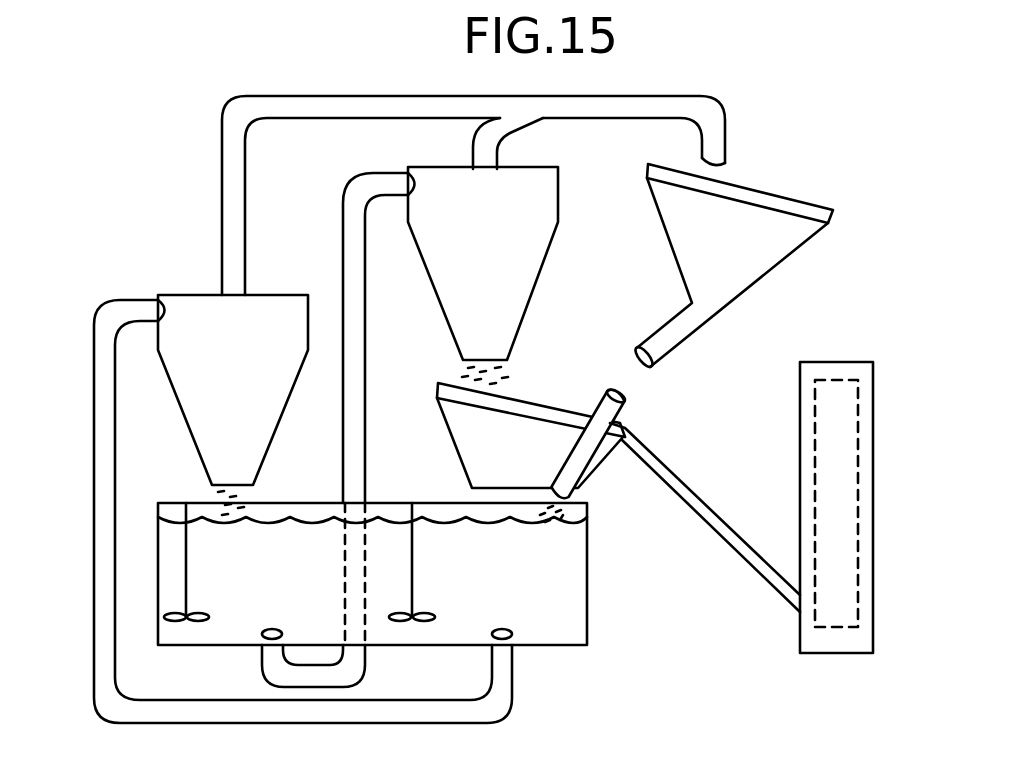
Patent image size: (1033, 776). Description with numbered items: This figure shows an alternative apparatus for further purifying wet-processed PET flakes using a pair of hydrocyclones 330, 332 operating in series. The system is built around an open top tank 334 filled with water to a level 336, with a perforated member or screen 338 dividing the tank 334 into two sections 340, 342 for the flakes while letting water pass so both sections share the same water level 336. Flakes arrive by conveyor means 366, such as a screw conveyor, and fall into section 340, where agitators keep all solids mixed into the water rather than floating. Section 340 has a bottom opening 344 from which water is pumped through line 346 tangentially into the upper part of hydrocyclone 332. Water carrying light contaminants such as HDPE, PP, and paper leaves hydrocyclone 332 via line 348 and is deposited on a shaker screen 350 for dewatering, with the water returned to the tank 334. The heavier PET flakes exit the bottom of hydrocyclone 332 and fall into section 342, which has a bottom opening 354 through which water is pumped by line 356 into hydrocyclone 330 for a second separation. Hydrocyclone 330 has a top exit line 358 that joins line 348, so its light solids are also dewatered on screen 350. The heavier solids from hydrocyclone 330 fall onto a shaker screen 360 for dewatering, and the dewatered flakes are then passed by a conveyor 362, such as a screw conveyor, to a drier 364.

The hydrocyclone 330 is at (560, 207).
The hydrocyclone 332 is at (204, 295).
The open top tank 334 is at (588, 600).
The water level 336 is at (570, 512).
The perforated member or screen 338 is at (372, 545).
The section 340 is at (526, 596).
The section 342 is at (300, 596).
The bottom opening 344 is at (510, 625).
The line 346 is at (510, 707).
The line 348 is at (293, 96).
The shaker screen 350 is at (767, 190).
The bottom opening 354 is at (256, 628).
The line 356 is at (360, 667).
The top exit line 358 is at (518, 137).
The shaker screen 360 is at (532, 400).
The conveyor 362 is at (768, 582).
The drier 364 is at (835, 362).
The conveyor means 366 is at (613, 420).